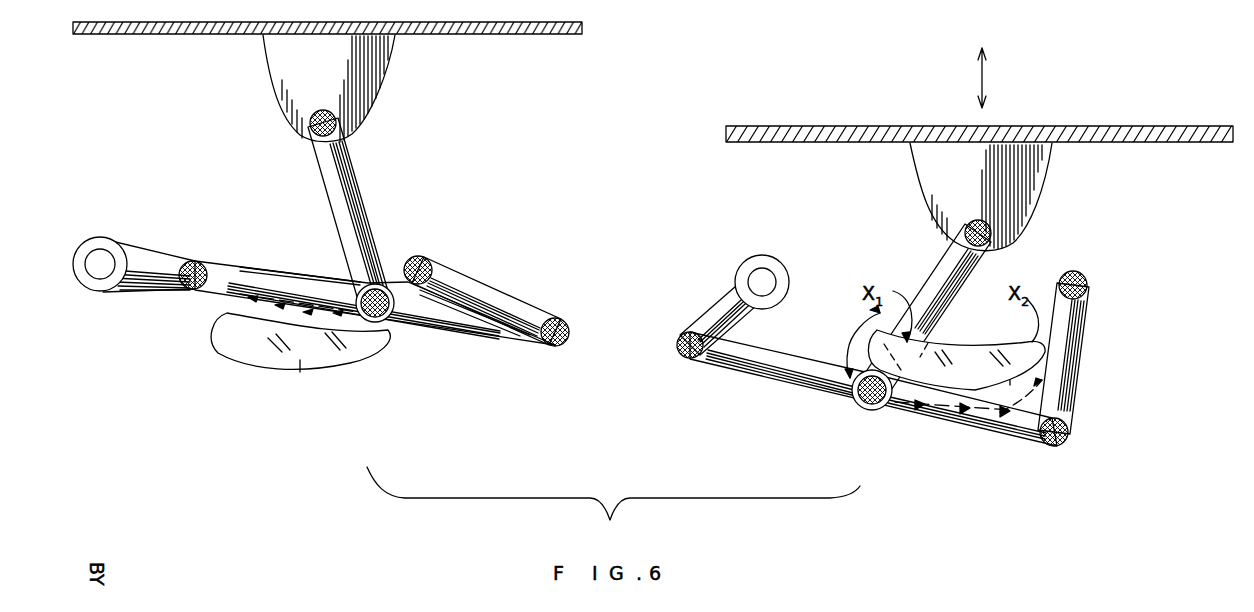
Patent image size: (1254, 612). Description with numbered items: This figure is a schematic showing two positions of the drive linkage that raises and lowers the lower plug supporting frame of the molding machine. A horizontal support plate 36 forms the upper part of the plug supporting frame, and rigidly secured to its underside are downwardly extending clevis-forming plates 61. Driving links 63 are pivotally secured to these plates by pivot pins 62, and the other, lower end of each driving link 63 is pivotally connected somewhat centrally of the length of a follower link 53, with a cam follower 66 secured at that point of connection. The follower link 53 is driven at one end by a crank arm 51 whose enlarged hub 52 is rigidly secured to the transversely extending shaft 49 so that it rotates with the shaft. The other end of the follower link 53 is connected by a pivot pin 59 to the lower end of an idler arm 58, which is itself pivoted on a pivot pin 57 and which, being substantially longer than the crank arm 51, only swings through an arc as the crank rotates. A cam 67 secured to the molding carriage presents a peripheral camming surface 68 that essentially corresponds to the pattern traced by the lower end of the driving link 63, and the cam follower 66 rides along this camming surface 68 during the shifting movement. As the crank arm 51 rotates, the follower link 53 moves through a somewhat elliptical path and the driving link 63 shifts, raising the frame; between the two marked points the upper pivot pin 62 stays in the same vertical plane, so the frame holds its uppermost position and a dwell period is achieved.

The horizontal support plate 36 is at (538, 35).
The clevis-forming plates 61 is at (392, 70).
The pivot pins 62 is at (318, 128).
The driving links 63 is at (375, 212).
The crank arms 51 is at (153, 292).
The enlarged hubs 52 is at (81, 249).
The transversely extending shaft 49 is at (99, 268).
The follower links 53 is at (430, 345).
The cam followers 66 is at (358, 298).
The pivot pins 57 is at (424, 262).
The idler arms 58 is at (512, 296).
The pivot pins 59 is at (556, 347).
The cam 67 is at (315, 358).
The peripheral camming surface 68 is at (268, 366).